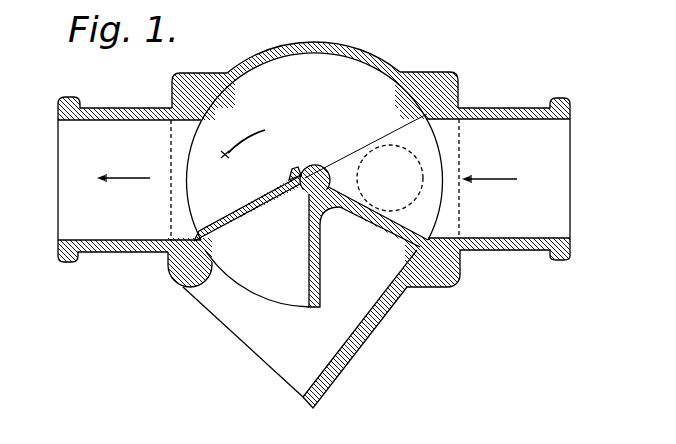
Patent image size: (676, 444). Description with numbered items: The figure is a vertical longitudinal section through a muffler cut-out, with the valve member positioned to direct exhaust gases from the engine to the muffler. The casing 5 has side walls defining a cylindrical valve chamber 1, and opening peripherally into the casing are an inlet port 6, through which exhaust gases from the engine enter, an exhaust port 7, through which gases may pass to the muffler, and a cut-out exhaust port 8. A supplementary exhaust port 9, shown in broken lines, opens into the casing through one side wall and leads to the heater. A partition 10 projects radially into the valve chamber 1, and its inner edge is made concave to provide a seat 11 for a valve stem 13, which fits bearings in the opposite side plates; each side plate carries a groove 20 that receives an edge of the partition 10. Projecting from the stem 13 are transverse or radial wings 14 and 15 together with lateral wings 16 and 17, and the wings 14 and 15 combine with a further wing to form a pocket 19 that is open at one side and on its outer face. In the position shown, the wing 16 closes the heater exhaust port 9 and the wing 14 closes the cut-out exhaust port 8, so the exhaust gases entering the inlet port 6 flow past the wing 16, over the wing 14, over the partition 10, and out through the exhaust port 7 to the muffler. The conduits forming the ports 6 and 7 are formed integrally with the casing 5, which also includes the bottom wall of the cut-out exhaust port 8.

The valve chamber 1 is at (387, 162).
The casing 5 is at (315, 41).
The inlet port 6 is at (485, 179).
The exhaust port 7 is at (136, 179).
The cut-out exhaust port 8 is at (306, 329).
The supplementary exhaust port 9 is at (390, 178).
The partition 10 is at (243, 218).
The seat 11 is at (293, 173).
The valve stem 13 is at (316, 165).
The radial wing 14 is at (396, 230).
The radial wing 15 is at (321, 293).
The lateral wing 16 is at (409, 132).
The lateral wing 17 is at (257, 273).
The pocket 19 is at (336, 228).
The groove 20 is at (220, 227).